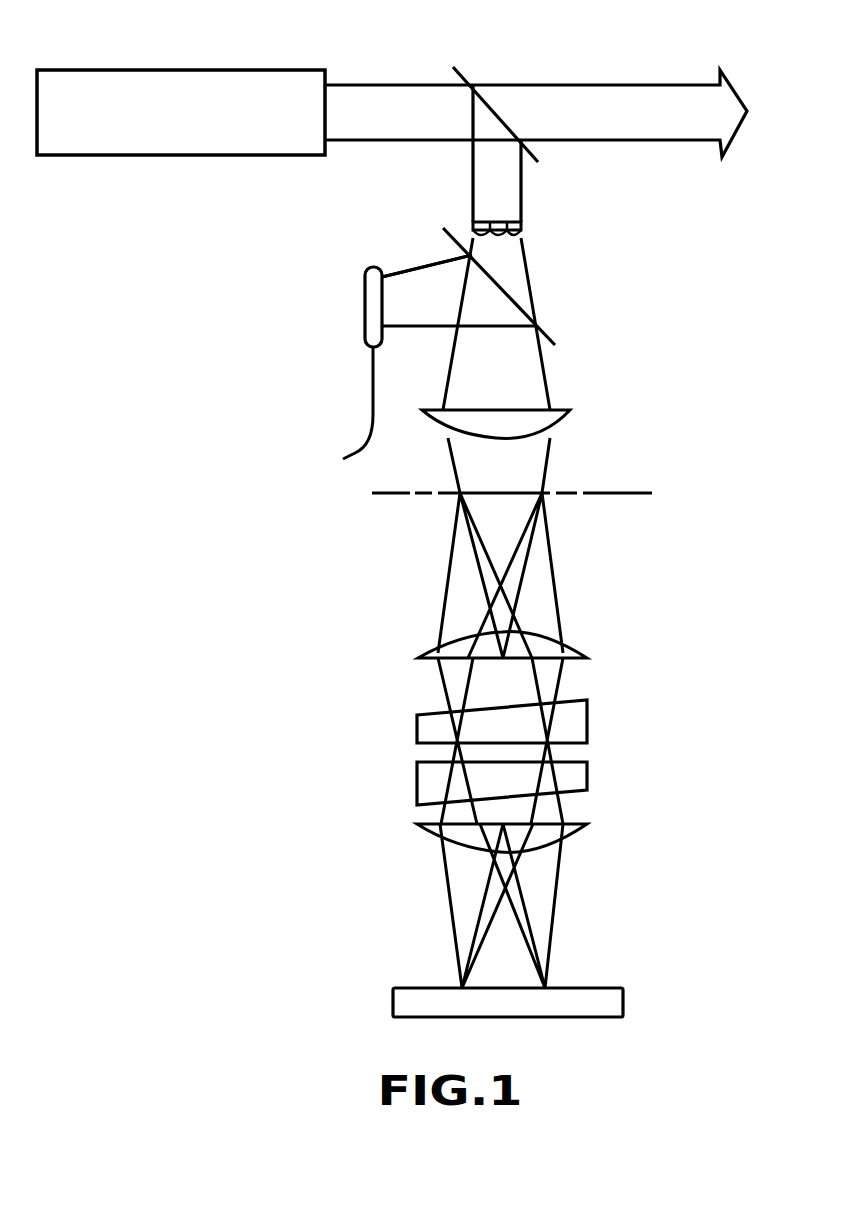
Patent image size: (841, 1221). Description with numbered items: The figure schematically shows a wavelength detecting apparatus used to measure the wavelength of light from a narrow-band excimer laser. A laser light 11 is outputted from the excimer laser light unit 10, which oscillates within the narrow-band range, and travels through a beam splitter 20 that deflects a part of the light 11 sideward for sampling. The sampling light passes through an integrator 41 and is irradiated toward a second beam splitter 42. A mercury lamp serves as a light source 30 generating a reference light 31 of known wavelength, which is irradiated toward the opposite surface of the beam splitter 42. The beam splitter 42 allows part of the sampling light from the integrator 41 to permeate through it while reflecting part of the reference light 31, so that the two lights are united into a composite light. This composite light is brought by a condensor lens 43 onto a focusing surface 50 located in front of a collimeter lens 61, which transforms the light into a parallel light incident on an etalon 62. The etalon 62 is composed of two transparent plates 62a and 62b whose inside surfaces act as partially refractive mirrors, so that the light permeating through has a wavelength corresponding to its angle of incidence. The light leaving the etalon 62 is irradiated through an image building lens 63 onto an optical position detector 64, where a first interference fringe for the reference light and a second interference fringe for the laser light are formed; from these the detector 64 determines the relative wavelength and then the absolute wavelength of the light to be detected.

The excimer laser light unit 10 is at (272, 70).
The laser light 11 is at (388, 85).
The beam splitter 20 is at (505, 118).
The light source 30 is at (365, 298).
The reference light 31 is at (412, 268).
The integrator 41 is at (521, 222).
The beam splitter 42 is at (520, 302).
The condensor lens 43 is at (558, 407).
The focusing surface 50 is at (628, 490).
The collimeter lens 61 is at (587, 655).
The etalon 62 is at (544, 743).
The transparent plate 62a is at (587, 700).
The transparent plate 62b is at (539, 794).
The image building lens 63 is at (587, 824).
The optical position detector 64 is at (608, 988).